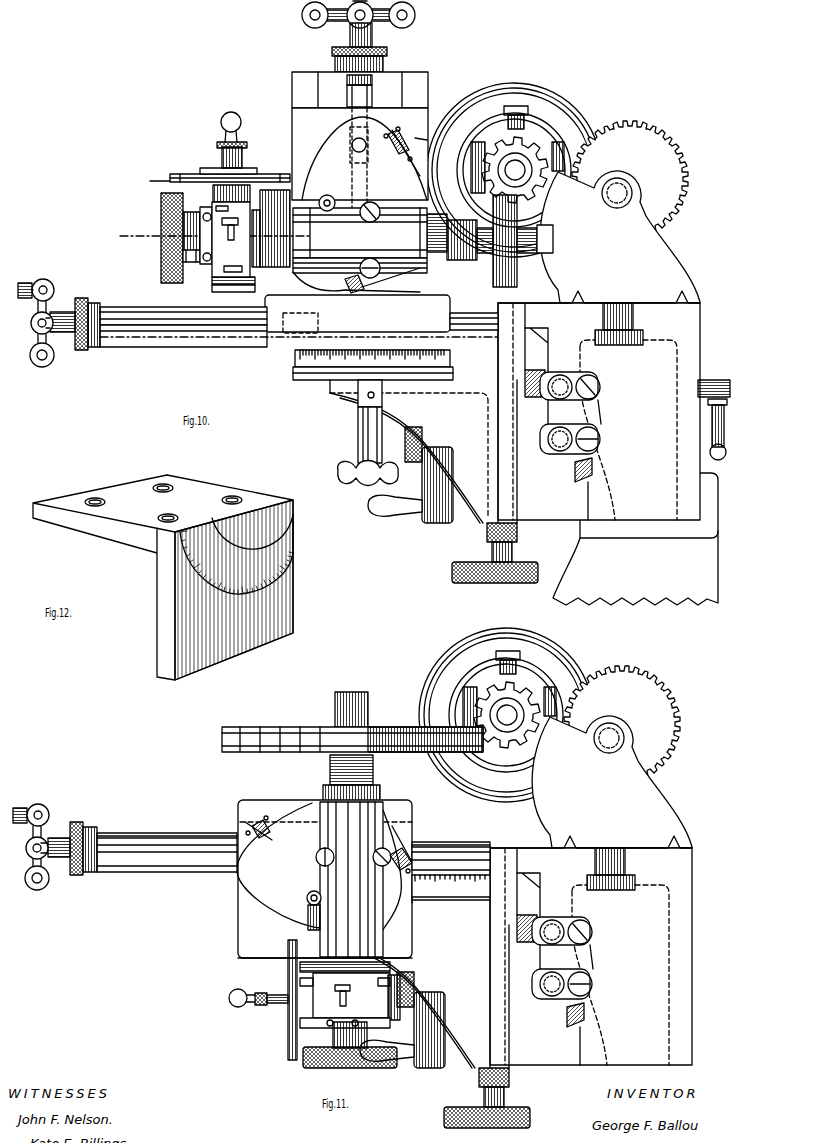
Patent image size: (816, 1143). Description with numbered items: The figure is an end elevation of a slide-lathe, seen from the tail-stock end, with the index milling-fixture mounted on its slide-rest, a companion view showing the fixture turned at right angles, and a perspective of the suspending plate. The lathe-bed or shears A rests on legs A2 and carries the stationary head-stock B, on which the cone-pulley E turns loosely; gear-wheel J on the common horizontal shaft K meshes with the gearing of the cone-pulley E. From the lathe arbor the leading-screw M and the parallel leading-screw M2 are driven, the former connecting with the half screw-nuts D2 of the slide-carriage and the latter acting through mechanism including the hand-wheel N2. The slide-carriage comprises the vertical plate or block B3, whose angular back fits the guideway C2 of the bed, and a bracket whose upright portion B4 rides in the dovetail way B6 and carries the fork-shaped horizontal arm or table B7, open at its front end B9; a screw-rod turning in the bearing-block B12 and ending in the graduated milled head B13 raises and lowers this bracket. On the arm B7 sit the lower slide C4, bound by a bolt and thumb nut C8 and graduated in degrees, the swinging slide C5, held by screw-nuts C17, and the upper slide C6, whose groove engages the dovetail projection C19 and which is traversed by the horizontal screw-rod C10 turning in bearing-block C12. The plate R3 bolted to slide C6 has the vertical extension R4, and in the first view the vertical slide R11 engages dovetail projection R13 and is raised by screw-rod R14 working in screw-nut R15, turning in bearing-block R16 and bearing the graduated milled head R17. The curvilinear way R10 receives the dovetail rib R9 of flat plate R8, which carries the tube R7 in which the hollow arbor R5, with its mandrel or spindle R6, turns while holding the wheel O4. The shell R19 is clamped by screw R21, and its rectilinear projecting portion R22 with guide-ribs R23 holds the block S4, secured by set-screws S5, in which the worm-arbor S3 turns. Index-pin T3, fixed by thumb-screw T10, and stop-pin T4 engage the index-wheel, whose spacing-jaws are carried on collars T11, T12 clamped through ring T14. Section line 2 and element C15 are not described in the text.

In FIG. 10, the section line 2 is at (228, 237).
In FIG. 10, the lathe-bed or shears A is at (599, 405).
In FIG. 11, the lathe-bed or shears A is at (591, 950).
In FIG. 10, the legs A2 is at (635, 539).
In FIG. 10, the stationary head-stock B is at (620, 237).
In FIG. 11, the stationary head-stock B is at (612, 782).
In FIG. 10, the vertical plate or block B3 is at (517, 462).
In FIG. 11, the vertical plate or block B3 is at (510, 958).
In FIG. 10, the upright portion B4 is at (407, 458).
In FIG. 11, the upright portion B4 is at (399, 1003).
In FIG. 10, the dovetail way B6 is at (513, 483).
In FIG. 11, the dovetail way B6 is at (520, 956).
In FIG. 10, the horizontal arm or table B7 is at (409, 447).
In FIG. 11, the horizontal arm or table B7 is at (451, 908).
In FIG. 10, the open front end B9 is at (293, 378).
In FIG. 10, the horizontal bearing-block B12 is at (517, 530).
In FIG. 11, the horizontal bearing-block B12 is at (508, 1077).
In FIG. 10, the milled head B13 is at (452, 575).
In FIG. 11, the milled head B13 is at (503, 1107).
In FIG. 10, the angular-shaped guideway C2 is at (548, 338).
In FIG. 11, the angular-shaped guideway C2 is at (563, 967).
In FIG. 10, the lower slide C4 is at (450, 359).
In FIG. 11, the lower slide C4 is at (445, 886).
In FIG. 10, the middle slide C5 is at (299, 339).
In FIG. 11, the middle slide C5 is at (293, 852).
In FIG. 10, the upper slide C6 is at (357, 314).
In FIG. 10, the screw or thumb nut C8 is at (358, 428).
In FIG. 10, the horizontal screw-rod C10 is at (50, 305).
In FIG. 11, the horizontal screw-rod C10 is at (50, 830).
In FIG. 10, the bearing-block C12 is at (100, 310).
In FIG. 11, the bearing-block C12 is at (97, 836).
In FIG. 10, the feed screw C15 is at (183, 336).
In FIG. 10, the screw-nuts C17 is at (375, 397).
In FIG. 10, the dovetail projection C19 is at (190, 307).
In FIG. 11, the dovetail projection C19 is at (195, 836).
In FIG. 10, the sectional or half screw-nuts D2 is at (535, 383).
In FIG. 11, the sectional or half screw-nuts D2 is at (527, 928).
In FIG. 10, the cone-pulley E is at (514, 170).
In FIG. 11, the cone-pulley E is at (506, 715).
In FIG. 10, the gear-wheel J is at (630, 179).
In FIG. 11, the gear-wheel J is at (622, 724).
In FIG. 10, the common horizontal shaft K is at (617, 193).
In FIG. 11, the common horizontal shaft K is at (609, 738).
In FIG. 10, the leading-screw M is at (570, 386).
In FIG. 11, the leading-screw M is at (562, 931).
In FIG. 10, the parallel leading-screw M2 is at (570, 439).
In FIG. 11, the parallel leading-screw M2 is at (562, 984).
In FIG. 10, the hand-wheel N2 is at (415, 517).
In FIG. 11, the hand-wheel N2 is at (402, 1037).
In FIG. 10, the wheel O4 is at (520, 222).
In FIG. 11, the wheel O4 is at (352, 722).
In FIG. 12, the plate R3 is at (163, 577).
In FIG. 10, the vertical extension R4 is at (292, 90).
In FIG. 12, the vertical extension R4 is at (234, 590).
In FIG. 11, the vertical extension R4 is at (325, 940).
In FIG. 10, the hollow arbor R5 is at (458, 262).
In FIG. 11, the hollow arbor R5 is at (373, 768).
In FIG. 10, the mandrel or spindle R6 is at (195, 262).
In FIG. 11, the mandrel or spindle R6 is at (333, 1040).
In FIG. 10, the tube R7 is at (360, 217).
In FIG. 11, the tube R7 is at (353, 879).
In FIG. 10, the flat plate R8 is at (357, 158).
In FIG. 11, the flat plate R8 is at (324, 879).
In FIG. 10, the bar or rib R9 is at (405, 281).
In FIG. 11, the bar or rib R9 is at (270, 826).
In FIG. 10, the curvilinear way R10 is at (427, 140).
In FIG. 12, the curvilinear way R10 is at (293, 527).
In FIG. 11, the curvilinear way R10 is at (255, 814).
In FIG. 10, the vertical slide R11 is at (360, 154).
In FIG. 10, the dovetail projection R13 is at (359, 91).
In FIG. 10, the vertical screw shaft or rod R14 is at (372, 30).
In FIG. 10, the screw-nut R15 is at (392, 133).
In FIG. 10, the bearing-block R16 is at (372, 80).
In FIG. 10, the milled head R17 is at (387, 51).
In FIG. 10, the shell R19 is at (240, 292).
In FIG. 11, the shell R19 is at (403, 1006).
In FIG. 10, the screw R21 is at (321, 199).
In FIG. 11, the screw R21 is at (308, 928).
In FIG. 10, the rectilinear projecting portion R22 is at (240, 230).
In FIG. 11, the rectilinear projecting portion R22 is at (354, 992).
In FIG. 10, the guide-ribs R23 is at (236, 236).
In FIG. 11, the guide-ribs R23 is at (345, 989).
In FIG. 10, the worm-arbor or spindle S3 is at (192, 212).
In FIG. 11, the worm-arbor or spindle S3 is at (345, 1028).
In FIG. 10, the block S4 is at (231, 239).
In FIG. 11, the block S4 is at (351, 995).
In FIG. 10, the set-screws S5 is at (253, 205).
In FIG. 11, the set-screws S5 is at (349, 970).
In FIG. 10, the index-pin T3 is at (241, 120).
In FIG. 11, the index-pin T3 is at (232, 1006).
In FIG. 10, the stop-pin T4 is at (177, 238).
In FIG. 10, the thumb-screw T10 is at (247, 145).
In FIG. 11, the thumb-screw T10 is at (260, 1006).
In FIG. 10, the collar T11 is at (222, 160).
In FIG. 10, the collar T12 is at (175, 178).
In FIG. 10, the ring T14 is at (262, 175).
In FIG. 11, the ring T14 is at (288, 968).